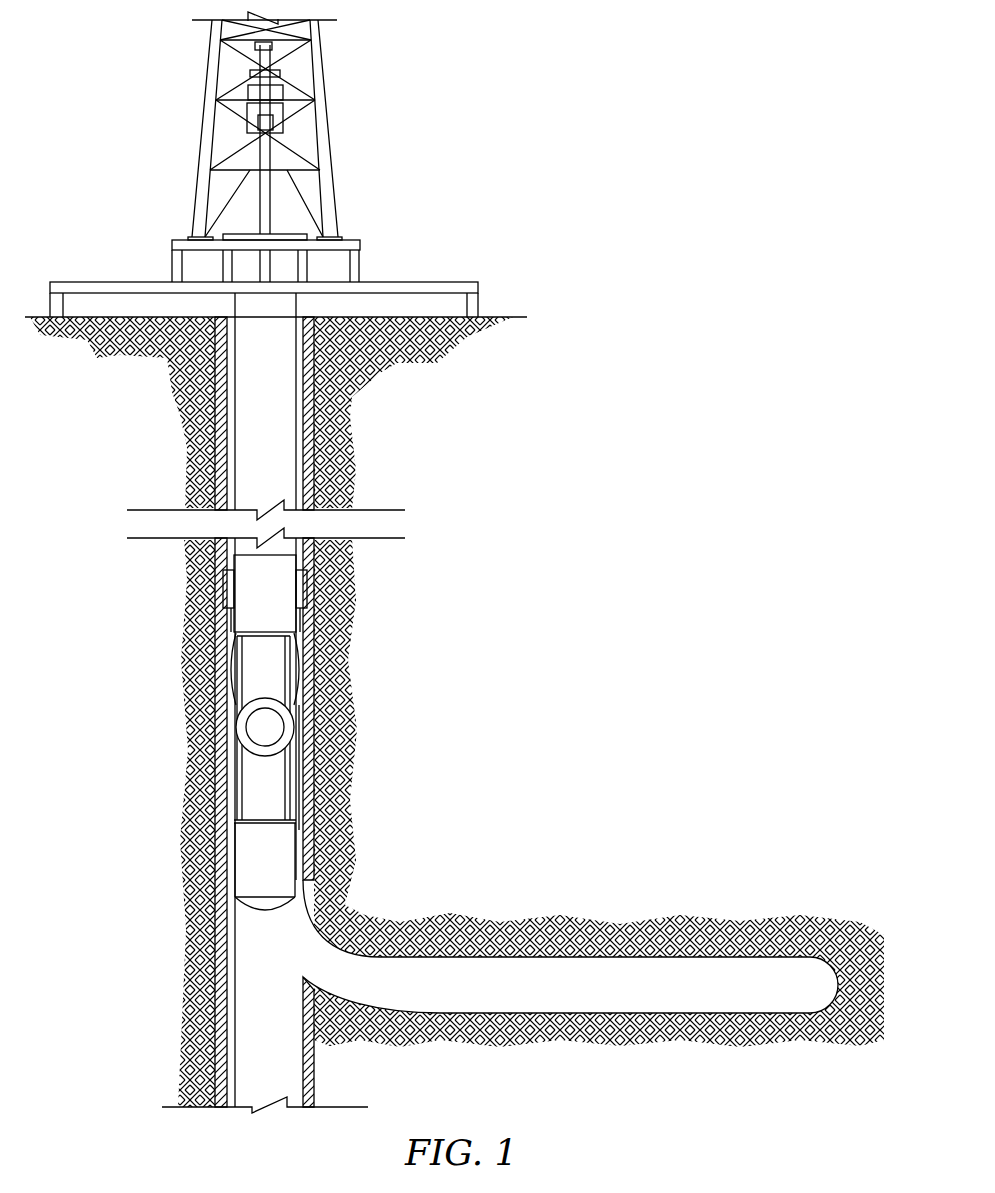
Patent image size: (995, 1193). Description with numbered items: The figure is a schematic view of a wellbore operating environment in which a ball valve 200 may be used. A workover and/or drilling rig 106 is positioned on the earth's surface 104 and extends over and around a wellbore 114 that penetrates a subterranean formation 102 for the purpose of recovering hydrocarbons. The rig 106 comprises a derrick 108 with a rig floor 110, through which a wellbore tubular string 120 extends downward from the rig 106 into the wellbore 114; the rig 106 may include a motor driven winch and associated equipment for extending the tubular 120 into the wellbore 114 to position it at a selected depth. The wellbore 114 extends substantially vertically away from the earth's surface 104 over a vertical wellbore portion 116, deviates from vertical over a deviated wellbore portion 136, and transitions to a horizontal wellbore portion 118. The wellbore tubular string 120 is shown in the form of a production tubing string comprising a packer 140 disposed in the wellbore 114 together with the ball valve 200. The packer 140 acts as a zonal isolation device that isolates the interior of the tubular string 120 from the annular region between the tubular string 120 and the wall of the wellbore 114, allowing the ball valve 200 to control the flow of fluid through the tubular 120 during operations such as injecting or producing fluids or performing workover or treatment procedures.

The subterranean formation 102 is at (370, 347).
The earth's surface 104 is at (505, 317).
The workover and/or drilling rig 106 is at (397, 101).
The derrick 108 is at (205, 74).
The rig floor 110 is at (137, 282).
The wellbore 114 is at (215, 433).
The vertical wellbore portion 116 is at (310, 626).
The horizontal wellbore portion 118 is at (492, 1018).
The wellbore tubular string 120 is at (318, 545).
The deviated wellbore portion 136 is at (345, 912).
The packer 140 is at (223, 583).
The ball valve 200 is at (232, 632).